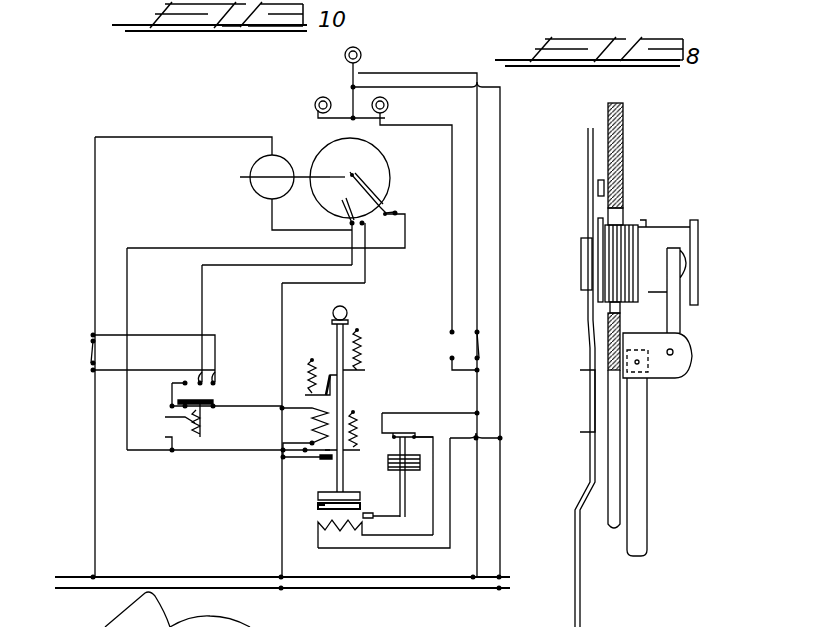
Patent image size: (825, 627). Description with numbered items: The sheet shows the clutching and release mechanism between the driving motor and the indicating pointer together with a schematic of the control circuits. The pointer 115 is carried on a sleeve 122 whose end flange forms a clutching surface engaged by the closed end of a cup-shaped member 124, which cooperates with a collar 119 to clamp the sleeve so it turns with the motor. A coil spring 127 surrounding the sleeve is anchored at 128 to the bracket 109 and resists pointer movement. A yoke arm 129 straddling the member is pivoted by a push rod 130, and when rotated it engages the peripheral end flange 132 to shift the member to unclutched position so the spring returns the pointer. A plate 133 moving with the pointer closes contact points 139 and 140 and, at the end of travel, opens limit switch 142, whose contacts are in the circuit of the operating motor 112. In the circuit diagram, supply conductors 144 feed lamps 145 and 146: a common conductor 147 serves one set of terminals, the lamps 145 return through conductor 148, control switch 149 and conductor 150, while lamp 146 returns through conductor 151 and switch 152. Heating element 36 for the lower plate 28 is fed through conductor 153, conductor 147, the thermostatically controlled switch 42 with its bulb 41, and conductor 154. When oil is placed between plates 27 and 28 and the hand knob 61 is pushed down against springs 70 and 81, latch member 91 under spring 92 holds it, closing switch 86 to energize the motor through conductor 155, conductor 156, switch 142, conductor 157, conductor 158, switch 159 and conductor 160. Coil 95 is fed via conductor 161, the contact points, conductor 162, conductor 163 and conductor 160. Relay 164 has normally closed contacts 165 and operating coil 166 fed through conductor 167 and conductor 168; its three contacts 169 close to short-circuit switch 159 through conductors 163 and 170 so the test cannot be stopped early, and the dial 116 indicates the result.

In FIG. 10, the upper plate element 27 is at (325, 490).
In FIG. 10, the lower plate element 28 is at (319, 506).
In FIG. 10, the heating element 36 is at (375, 537).
In FIG. 10, the bulb 41 is at (378, 509).
In FIG. 10, the thermostatically controlled switch 42 is at (397, 438).
In FIG. 10, the hand knob 61 is at (334, 310).
In FIG. 10, the compression spring 70 is at (363, 347).
In FIG. 10, the compression spring 81 is at (355, 428).
In FIG. 10, the switch 86 is at (312, 462).
In FIG. 10, the latch member 91 is at (325, 367).
In FIG. 10, the compression spring 92 is at (300, 367).
In FIG. 10, the coil 95 is at (316, 432).
In FIG. 8, the bracket 109 is at (617, 147).
In FIG. 10, the operating motor 112 is at (280, 163).
In FIG. 10, the pointer 115 is at (352, 176).
In FIG. 8, the pointer 115 is at (580, 490).
In FIG. 10, the dial 116 is at (384, 162).
In FIG. 8, the collar 119 is at (583, 262).
In FIG. 8, the sleeve 122 is at (601, 243).
In FIG. 8, the cup-shaped member 124 is at (655, 237).
In FIG. 8, the coil spring 127 is at (620, 228).
In FIG. 8, the anchor 128 is at (600, 178).
In FIG. 8, the yoke arm 129 is at (673, 310).
In FIG. 8, the push rod 130 is at (643, 463).
In FIG. 8, the peripheral end flange 132 is at (705, 213).
In FIG. 10, the plate 133 is at (380, 182).
In FIG. 8, the plate 133 is at (585, 412).
In FIG. 10, the contact point 139 is at (351, 189).
In FIG. 10, the contact point 140 is at (343, 207).
In FIG. 10, the limit switch 142 is at (388, 210).
In FIG. 10, the supply circuit conductors 144 is at (224, 588).
In FIG. 10, the incandescent lamps 145 is at (318, 97).
In FIG. 10, the incandescent lamp 146 is at (385, 79).
In FIG. 10, the conductor 147 is at (500, 165).
In FIG. 10, the conductor 148 is at (432, 248).
In FIG. 10, the control switch 149 is at (451, 334).
In FIG. 10, the conductor 150 is at (473, 537).
In FIG. 10, the conductor 151 is at (450, 66).
In FIG. 10, the switch 152 is at (478, 333).
In FIG. 10, the conductor 153 is at (408, 549).
In FIG. 10, the conductor 154 is at (450, 478).
In FIG. 10, the conductor 155 is at (283, 507).
In FIG. 10, the conductor 156 is at (178, 237).
In FIG. 10, the conductor 157 is at (271, 217).
In FIG. 10, the conductor 158 is at (188, 139).
In FIG. 10, the switch 159 is at (93, 350).
In FIG. 10, the conductor 160 is at (94, 499).
In FIG. 10, the conductor 161 is at (282, 301).
In FIG. 10, the conductor 162 is at (202, 266).
In FIG. 10, the conductor 163 is at (168, 362).
In FIG. 10, the relay 164 is at (208, 413).
In FIG. 10, the normally closed contacts 165 is at (258, 405).
In FIG. 10, the operating coil 166 is at (161, 417).
In FIG. 10, the conductor 167 is at (204, 442).
In FIG. 10, the conductor 168 is at (238, 366).
In FIG. 10, the contacts 169 is at (217, 362).
In FIG. 10, the conductor 170 is at (168, 323).